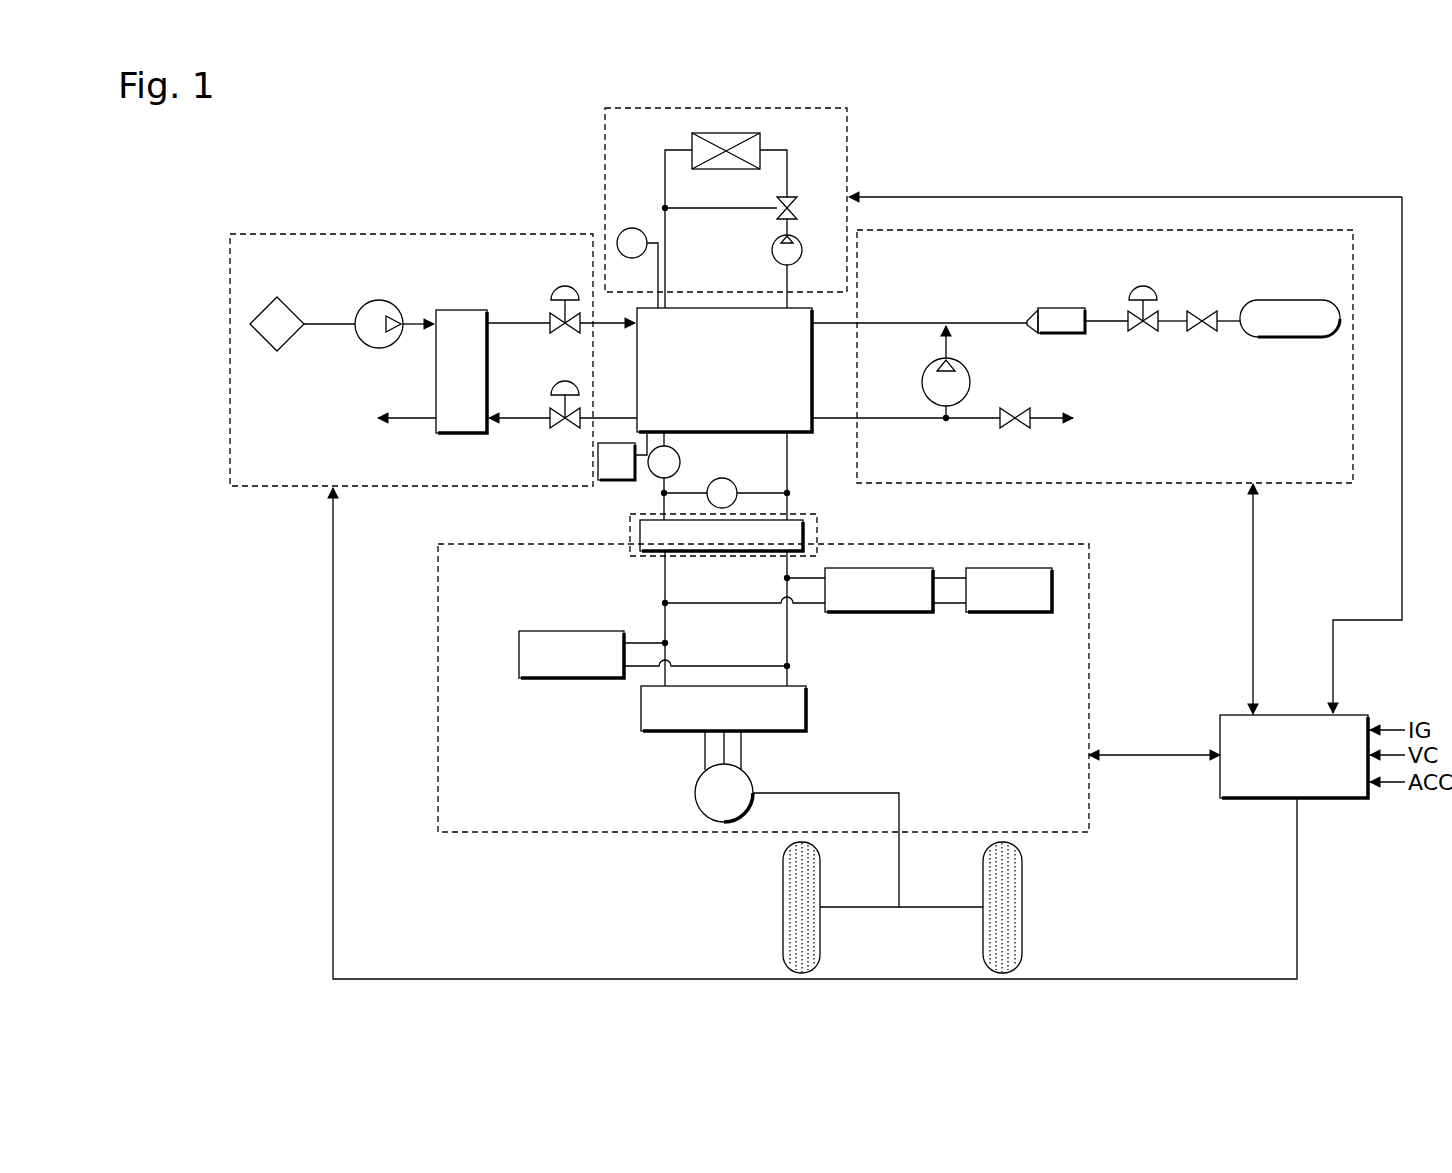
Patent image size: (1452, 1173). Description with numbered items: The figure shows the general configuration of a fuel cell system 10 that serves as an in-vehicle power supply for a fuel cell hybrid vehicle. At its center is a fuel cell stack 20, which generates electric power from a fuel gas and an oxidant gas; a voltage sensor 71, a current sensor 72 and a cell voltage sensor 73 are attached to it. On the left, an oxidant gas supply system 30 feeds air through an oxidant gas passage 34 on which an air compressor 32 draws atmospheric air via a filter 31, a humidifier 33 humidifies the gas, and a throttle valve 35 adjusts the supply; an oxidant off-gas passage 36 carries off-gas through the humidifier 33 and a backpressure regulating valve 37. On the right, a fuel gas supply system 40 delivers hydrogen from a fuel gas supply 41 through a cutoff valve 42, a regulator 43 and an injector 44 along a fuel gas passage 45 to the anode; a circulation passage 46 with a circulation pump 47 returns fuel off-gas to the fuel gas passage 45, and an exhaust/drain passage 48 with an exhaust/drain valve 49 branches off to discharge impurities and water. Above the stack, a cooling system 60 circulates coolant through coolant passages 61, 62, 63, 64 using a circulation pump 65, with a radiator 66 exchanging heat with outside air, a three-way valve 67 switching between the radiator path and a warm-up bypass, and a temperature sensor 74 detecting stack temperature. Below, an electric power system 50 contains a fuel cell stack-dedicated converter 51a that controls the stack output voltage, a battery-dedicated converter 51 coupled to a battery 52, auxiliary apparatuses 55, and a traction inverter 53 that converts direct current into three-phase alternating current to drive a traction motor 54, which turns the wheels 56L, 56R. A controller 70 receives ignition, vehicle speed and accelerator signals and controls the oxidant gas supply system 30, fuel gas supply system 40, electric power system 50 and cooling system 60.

The fuel cell system 10 is at (1078, 146).
The fuel cell stack 20 is at (795, 433).
The oxidant gas supply system 30 is at (385, 234).
The filter 31 is at (290, 305).
The air compressor 32 is at (379, 300).
The humidifier 33 is at (462, 310).
The oxidant gas passage 34 is at (520, 323).
The throttle valve 35 is at (560, 288).
The oxidant off-gas passage 36 is at (520, 418).
The backpressure regulating valve 37 is at (560, 383).
The fuel gas supply system 40 is at (1283, 484).
The fuel gas supply 41 is at (1268, 300).
The cutoff valve 42 is at (1205, 310).
The regulator 43 is at (1147, 286).
The injector 44 is at (1062, 308).
The fuel gas passage 45 is at (878, 323).
The circulation passage 46 is at (874, 418).
The circulation pump 47 is at (984, 363).
The exhaust/drain passage 48 is at (1044, 418).
The exhaust/drain valve 49 is at (1008, 428).
The electric power system 50 is at (1089, 576).
The battery DC-DC converter (BDC) 51 is at (878, 613).
The fuel cell stack-dedicated converter (FDC) 51a is at (817, 536).
The battery 52 is at (1005, 613).
The traction inverter 53 is at (806, 704).
The traction motor 54 is at (750, 780).
The auxiliary apparatuses 55 is at (560, 630).
The wheel 56L is at (783, 920).
The wheel 56R is at (1022, 915).
The cooling system 60 is at (847, 120).
The coolant passage 61 is at (790, 266).
The coolant passage 62 is at (750, 208).
The coolant passage 63 is at (665, 255).
The coolant passage 64 is at (760, 147).
The circulation pump 65 is at (792, 238).
The radiator 66 is at (722, 169).
The three-way valve 67 is at (793, 197).
The controller (ECU) 70 is at (1345, 715).
The voltage sensor 71 is at (730, 481).
The current sensor 72 is at (652, 474).
The cell voltage sensor 73 is at (598, 458).
The temperature sensor 74 is at (632, 228).